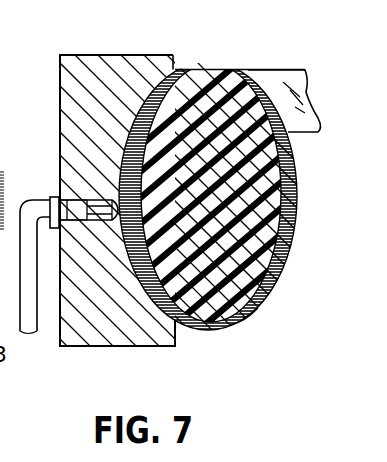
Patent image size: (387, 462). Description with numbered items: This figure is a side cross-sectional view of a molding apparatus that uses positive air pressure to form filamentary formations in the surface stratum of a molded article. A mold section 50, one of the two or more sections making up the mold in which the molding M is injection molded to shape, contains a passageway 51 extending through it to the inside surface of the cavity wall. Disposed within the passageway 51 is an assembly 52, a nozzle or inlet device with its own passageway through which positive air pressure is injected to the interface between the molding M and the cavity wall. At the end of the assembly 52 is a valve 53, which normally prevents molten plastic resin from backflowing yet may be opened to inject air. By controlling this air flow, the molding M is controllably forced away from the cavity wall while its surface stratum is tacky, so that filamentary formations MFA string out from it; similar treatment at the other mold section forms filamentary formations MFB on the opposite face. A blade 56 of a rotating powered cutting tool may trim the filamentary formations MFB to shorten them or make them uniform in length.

The mold section 50 is at (82, 62).
The passageway 51 is at (80, 192).
The assembly 52 is at (79, 203).
The valve 53 is at (82, 152).
The blade 56 is at (291, 83).
The molding M is at (255, 216).
The filamentary formations MFA is at (176, 69).
The filamentary formations MFB is at (258, 308).